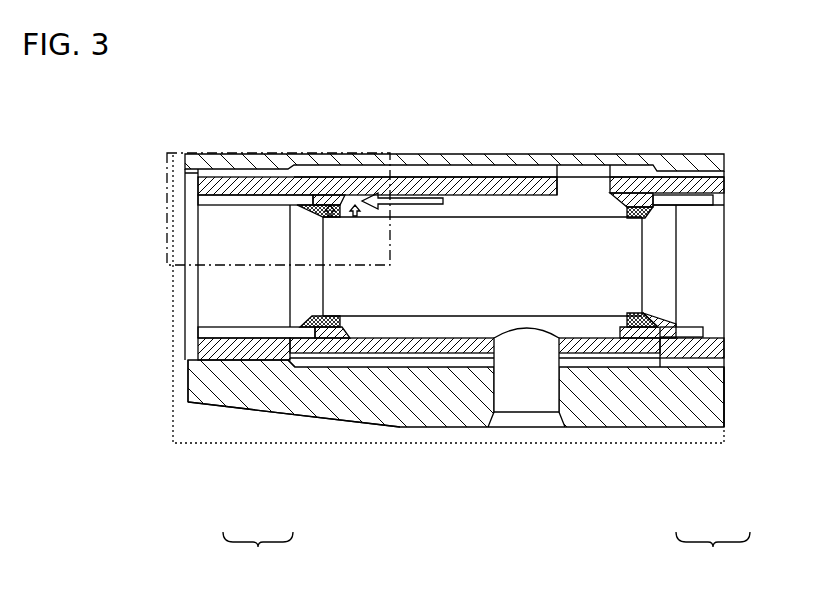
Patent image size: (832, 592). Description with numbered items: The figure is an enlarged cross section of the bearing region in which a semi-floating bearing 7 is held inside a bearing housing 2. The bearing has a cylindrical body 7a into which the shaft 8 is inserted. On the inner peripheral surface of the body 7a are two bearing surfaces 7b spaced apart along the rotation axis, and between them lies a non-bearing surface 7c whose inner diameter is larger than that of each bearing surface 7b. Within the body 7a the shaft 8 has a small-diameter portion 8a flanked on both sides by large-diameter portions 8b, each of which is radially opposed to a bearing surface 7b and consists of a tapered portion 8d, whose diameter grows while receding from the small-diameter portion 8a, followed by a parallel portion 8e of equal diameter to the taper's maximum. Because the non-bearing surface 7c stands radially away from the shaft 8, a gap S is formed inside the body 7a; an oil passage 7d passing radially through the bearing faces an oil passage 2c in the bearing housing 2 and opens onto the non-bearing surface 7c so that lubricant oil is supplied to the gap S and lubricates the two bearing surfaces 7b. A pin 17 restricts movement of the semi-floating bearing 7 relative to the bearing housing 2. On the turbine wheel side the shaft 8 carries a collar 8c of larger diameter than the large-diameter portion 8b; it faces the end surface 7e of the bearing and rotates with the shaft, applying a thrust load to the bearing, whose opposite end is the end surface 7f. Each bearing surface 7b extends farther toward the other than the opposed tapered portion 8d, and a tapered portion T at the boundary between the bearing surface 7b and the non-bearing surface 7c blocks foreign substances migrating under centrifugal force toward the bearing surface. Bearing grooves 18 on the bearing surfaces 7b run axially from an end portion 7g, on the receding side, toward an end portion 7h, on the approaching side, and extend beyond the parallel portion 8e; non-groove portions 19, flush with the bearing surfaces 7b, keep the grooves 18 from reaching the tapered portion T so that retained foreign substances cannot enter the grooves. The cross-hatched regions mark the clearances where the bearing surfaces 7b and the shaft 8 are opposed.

The bearing housing 2 is at (458, 154).
The oil passage 2c is at (602, 156).
The semi-floating bearing 7 is at (437, 198).
The body 7a is at (321, 172).
The bearing surface 7b is at (213, 330).
The non-bearing surface 7c is at (390, 336).
The oil passage 7d is at (562, 178).
The end surface 7e is at (188, 212).
The end surface 7f is at (724, 188).
The end portion 7g is at (205, 346).
The end portion 7h is at (356, 326).
The shaft 8 is at (185, 288).
The small-diameter portion 8a is at (446, 318).
The large-diameter portion 8b is at (486, 552).
The collar 8c is at (187, 361).
The tapered portion 8d is at (307, 360).
The parallel portion 8e is at (227, 362).
The pin 17 is at (558, 408).
The bearing groove 18 is at (262, 199).
The non-groove portion 19 is at (320, 313).
The tapered portion T is at (348, 205).
The gap S is at (489, 215).